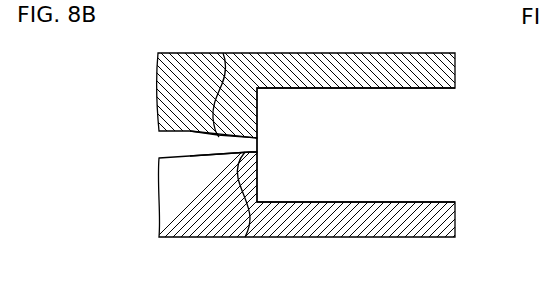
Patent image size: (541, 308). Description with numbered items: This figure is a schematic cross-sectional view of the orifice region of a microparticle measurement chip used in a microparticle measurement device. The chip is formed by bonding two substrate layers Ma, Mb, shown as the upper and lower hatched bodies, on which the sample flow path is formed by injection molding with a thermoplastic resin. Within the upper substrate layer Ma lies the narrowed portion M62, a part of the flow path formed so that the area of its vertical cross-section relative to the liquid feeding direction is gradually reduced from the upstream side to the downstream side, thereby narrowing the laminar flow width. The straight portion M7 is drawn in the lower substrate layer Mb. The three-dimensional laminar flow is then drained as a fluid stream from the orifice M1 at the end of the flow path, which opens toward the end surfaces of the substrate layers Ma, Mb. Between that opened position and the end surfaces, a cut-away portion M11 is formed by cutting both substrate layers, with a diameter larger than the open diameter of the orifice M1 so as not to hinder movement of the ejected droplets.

The substrate layer Ma is at (457, 63).
The substrate layer Mb is at (457, 217).
The narrowed portion M62 is at (223, 53).
The straight portion M7 is at (245, 237).
The orifice M1 is at (257, 147).
The cut-away portion M11 is at (459, 90).